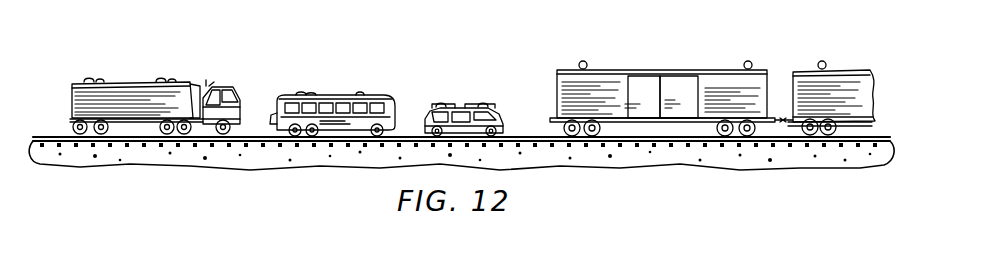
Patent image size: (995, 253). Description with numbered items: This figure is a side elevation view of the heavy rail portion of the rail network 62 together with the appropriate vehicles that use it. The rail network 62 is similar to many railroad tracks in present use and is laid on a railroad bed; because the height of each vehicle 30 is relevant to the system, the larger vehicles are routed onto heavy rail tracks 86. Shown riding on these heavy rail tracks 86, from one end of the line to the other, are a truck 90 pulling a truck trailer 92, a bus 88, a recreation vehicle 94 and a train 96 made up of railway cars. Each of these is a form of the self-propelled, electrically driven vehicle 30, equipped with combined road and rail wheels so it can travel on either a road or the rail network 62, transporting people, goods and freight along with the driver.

The vehicle 30 is at (122, 78).
The rail network 62 is at (329, 142).
The heavy rail tracks 86 is at (688, 142).
The buses 88 is at (305, 93).
The trucks 90 is at (242, 48).
The truck trailers 92 is at (141, 137).
The recreation vehicles 94 is at (467, 72).
The trains 96 is at (682, 70).